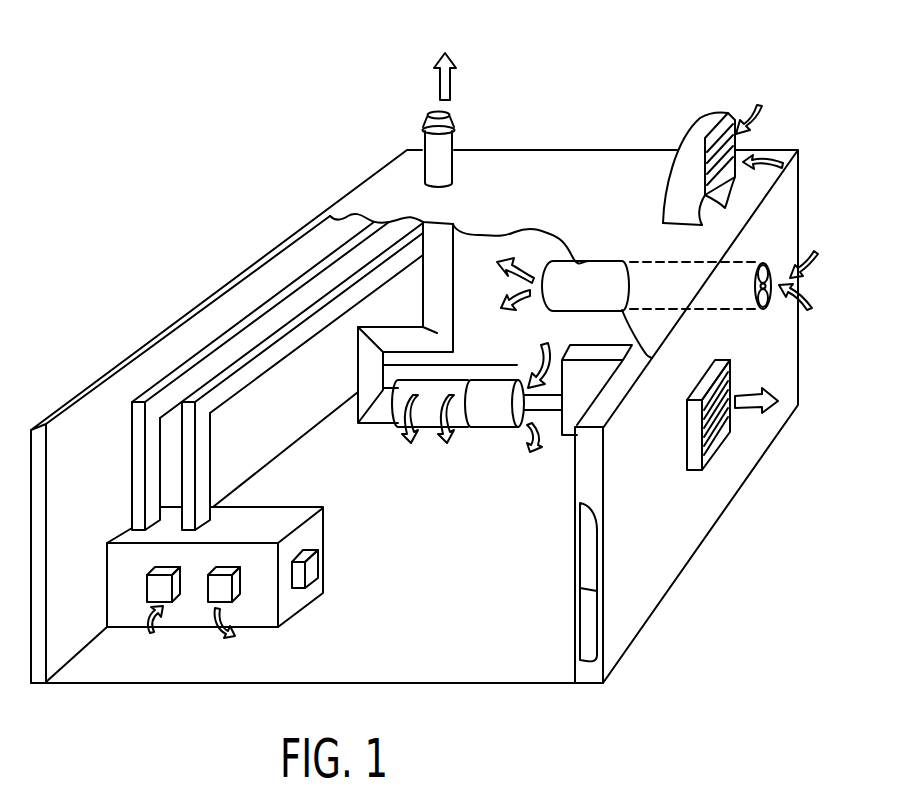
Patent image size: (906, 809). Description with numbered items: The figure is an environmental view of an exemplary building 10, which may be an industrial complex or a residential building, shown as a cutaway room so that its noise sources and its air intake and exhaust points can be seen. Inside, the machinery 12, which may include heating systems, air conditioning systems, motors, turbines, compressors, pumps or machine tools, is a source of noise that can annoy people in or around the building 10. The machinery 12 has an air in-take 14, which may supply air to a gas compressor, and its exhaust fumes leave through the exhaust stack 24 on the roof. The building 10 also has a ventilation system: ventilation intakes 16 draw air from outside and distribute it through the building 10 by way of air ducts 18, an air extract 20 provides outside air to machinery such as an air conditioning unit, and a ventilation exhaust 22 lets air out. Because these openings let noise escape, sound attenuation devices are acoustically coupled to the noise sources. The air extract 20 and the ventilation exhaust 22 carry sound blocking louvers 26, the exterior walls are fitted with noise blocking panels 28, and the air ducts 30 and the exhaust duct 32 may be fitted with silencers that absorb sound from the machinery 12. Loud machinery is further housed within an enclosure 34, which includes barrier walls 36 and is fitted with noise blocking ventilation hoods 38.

The building 10 is at (202, 110).
The machinery 12 is at (436, 418).
The air in-take 14 is at (499, 420).
The ventilation intake 16 is at (771, 265).
The air duct 18 is at (577, 303).
The air extract 20 is at (710, 126).
The ventilation exhaust 22 is at (692, 443).
The exhaust stack 24 is at (448, 142).
The sound blocking louver 26 is at (710, 163).
The noise blocking panel 28 is at (580, 607).
The air duct 30 is at (408, 233).
The exhaust duct 32 is at (368, 374).
The enclosure 34 is at (232, 499).
The barrier wall 36 is at (322, 508).
The noise blocking ventilation hood 38 is at (303, 552).